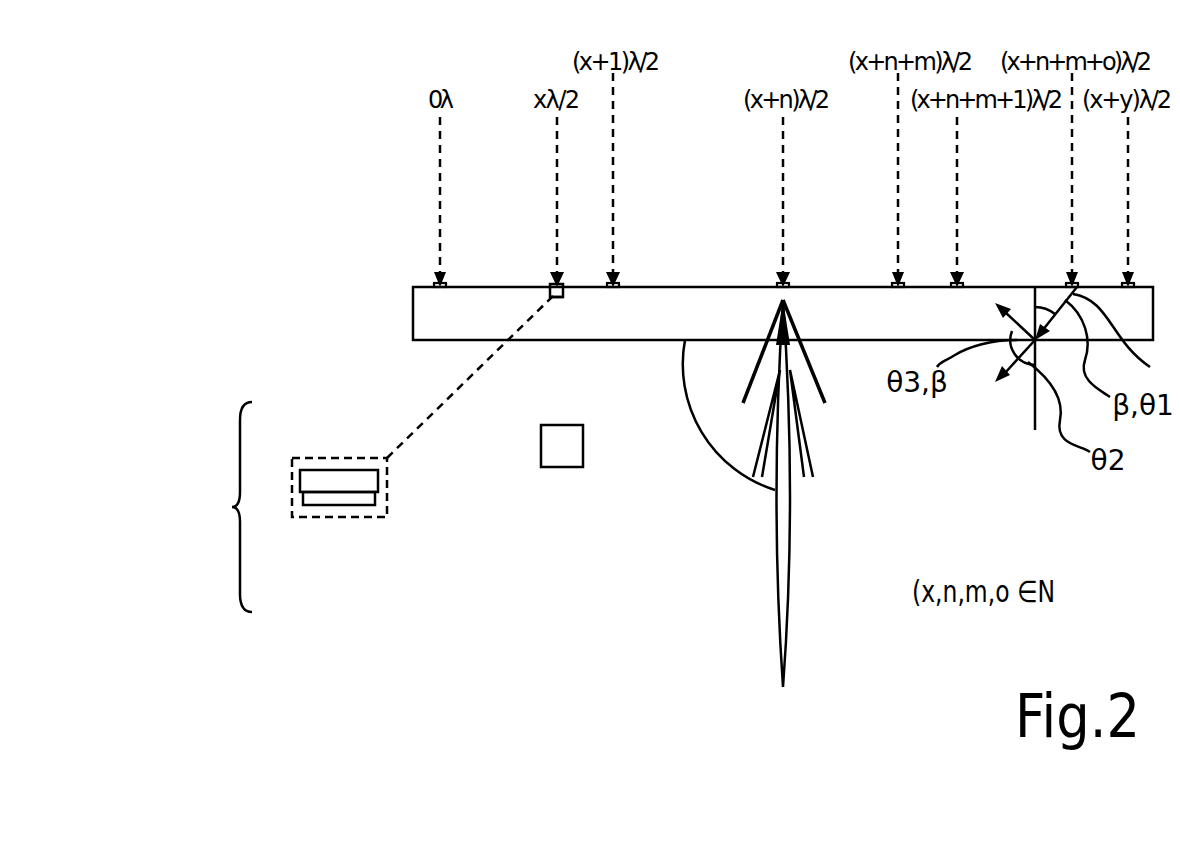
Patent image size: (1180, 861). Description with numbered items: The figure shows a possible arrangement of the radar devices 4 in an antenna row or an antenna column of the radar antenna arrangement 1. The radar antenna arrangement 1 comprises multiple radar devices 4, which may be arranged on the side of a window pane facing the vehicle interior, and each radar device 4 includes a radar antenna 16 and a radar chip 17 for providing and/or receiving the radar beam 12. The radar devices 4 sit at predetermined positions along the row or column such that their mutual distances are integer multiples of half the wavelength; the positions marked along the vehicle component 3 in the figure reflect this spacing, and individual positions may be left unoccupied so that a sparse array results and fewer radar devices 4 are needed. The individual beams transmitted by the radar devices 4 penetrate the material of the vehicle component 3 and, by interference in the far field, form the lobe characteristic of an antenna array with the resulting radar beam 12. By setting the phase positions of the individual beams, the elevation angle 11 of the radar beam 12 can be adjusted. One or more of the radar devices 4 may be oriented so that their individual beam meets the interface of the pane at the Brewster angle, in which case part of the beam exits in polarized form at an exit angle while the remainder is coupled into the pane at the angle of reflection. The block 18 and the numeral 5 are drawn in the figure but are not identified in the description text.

The radar antenna arrangement 1 is at (340, 94).
The vehicle component 3 is at (974, 306).
The antenna elements 5 is at (783, 311).
The radar device 4 is at (340, 458).
The elevation angle 11 is at (715, 453).
The radar beam 12 is at (838, 522).
The radar antenna 16 is at (572, 312).
The radar chip 17 is at (568, 280).
The control unit 18 is at (583, 442).